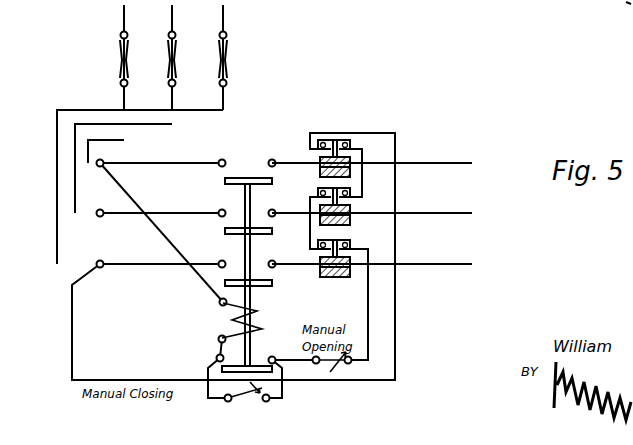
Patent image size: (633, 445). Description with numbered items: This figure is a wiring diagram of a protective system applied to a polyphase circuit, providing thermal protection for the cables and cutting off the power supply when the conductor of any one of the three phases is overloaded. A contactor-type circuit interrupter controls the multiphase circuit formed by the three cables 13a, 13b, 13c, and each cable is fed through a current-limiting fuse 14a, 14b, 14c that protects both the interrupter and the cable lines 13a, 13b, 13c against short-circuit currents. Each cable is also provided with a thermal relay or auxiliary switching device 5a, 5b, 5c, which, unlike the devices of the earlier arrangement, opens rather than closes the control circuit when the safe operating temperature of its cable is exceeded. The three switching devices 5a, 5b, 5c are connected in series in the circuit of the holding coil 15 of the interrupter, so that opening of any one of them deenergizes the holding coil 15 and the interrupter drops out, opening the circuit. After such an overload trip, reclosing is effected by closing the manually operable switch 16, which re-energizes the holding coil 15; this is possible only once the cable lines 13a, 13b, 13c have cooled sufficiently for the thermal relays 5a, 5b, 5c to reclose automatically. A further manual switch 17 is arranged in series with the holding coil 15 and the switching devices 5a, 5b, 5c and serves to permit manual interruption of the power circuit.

The thermal relay or auxiliary switching device 5a is at (300, 143).
The thermal relay or auxiliary switching device 5b is at (302, 200).
The thermal relay or auxiliary switching device 5c is at (302, 291).
The cable 13a is at (466, 165).
The cable 13b is at (466, 215).
The cable 13c is at (466, 266).
The current-limiting fuse 14a is at (122, 72).
The current-limiting fuse 14b is at (170, 72).
The current-limiting fuse 14c is at (221, 72).
The holding coil 15 is at (262, 329).
The manually operable switch 16 is at (247, 400).
The manual switch 17 is at (332, 367).